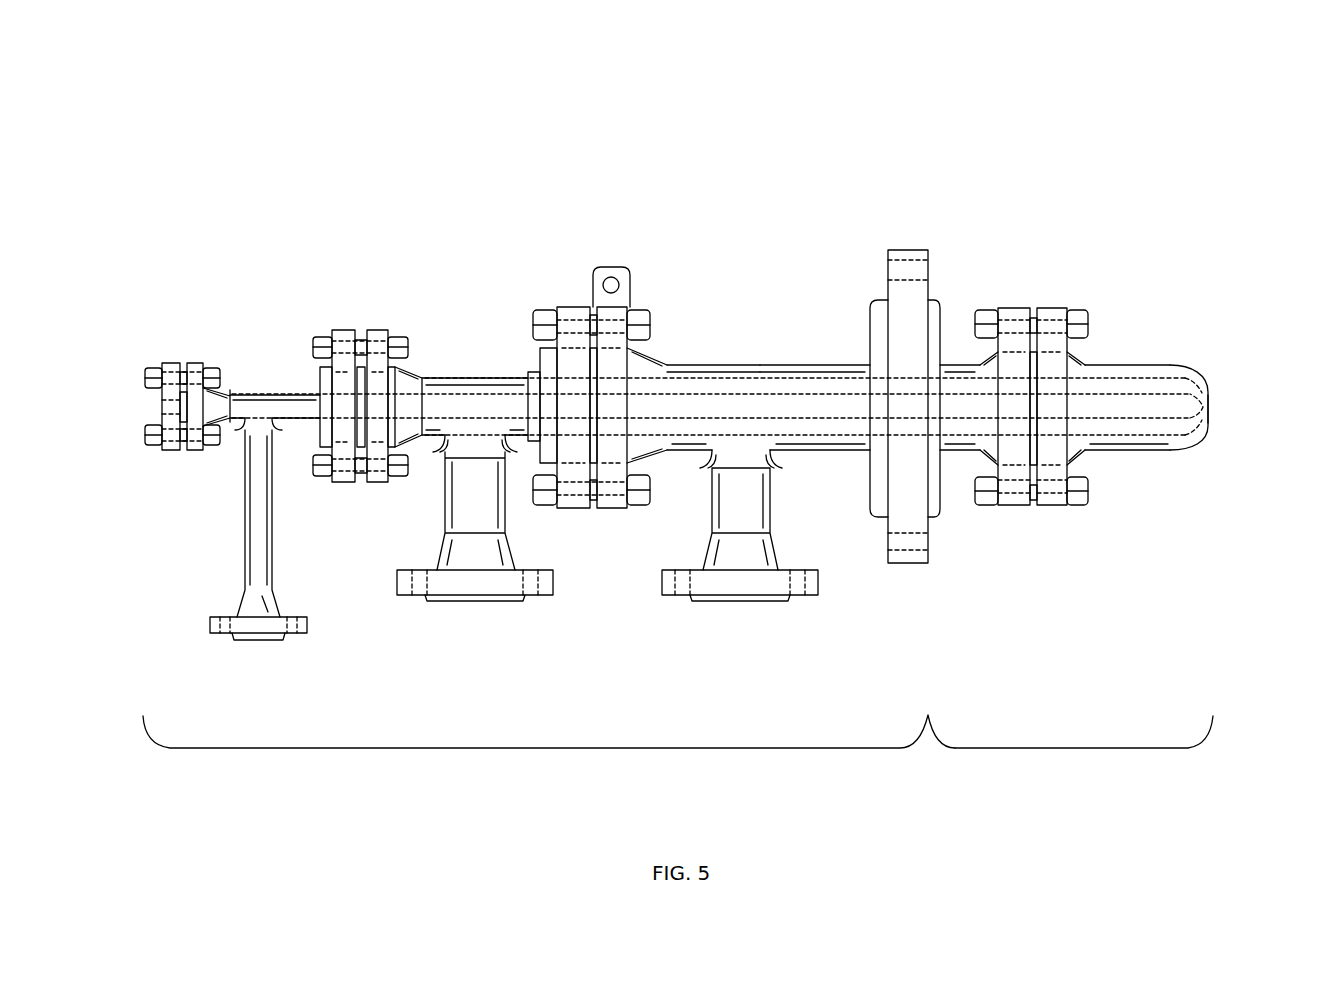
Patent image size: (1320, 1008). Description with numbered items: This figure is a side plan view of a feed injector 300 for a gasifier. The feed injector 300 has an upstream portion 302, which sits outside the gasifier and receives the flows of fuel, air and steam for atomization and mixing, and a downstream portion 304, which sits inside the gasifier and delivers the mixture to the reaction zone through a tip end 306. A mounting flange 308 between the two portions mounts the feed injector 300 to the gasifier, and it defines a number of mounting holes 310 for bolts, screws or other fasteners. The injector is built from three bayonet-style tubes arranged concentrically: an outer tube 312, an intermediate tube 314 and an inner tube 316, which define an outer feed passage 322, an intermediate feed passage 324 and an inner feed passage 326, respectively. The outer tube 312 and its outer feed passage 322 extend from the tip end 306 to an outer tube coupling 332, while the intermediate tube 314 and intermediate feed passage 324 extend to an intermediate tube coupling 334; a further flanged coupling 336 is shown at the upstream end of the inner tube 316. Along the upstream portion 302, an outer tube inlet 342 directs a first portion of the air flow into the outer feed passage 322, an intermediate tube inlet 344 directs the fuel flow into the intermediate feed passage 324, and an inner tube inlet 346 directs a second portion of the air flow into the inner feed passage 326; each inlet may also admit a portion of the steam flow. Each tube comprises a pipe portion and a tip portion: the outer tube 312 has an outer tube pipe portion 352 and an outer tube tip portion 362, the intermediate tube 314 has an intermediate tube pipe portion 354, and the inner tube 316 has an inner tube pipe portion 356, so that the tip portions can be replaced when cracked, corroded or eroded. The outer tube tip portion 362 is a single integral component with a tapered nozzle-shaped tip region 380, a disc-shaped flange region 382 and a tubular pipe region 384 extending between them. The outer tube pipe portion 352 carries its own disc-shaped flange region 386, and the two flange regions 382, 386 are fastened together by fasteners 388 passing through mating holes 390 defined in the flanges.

The feed injector 300 is at (205, 78).
The upstream portion 302 is at (540, 748).
The downstream portion 304 is at (1075, 748).
The tip end 306 is at (1215, 405).
The mounting flange 308 is at (900, 250).
The mounting holes 310 is at (895, 280).
The outer tube 312 is at (742, 365).
The intermediate tube 314 is at (495, 378).
The inner tube 316 is at (305, 400).
The outer feed passage 322 is at (1118, 440).
The intermediate feed passage 324 is at (1138, 425).
The inner feed passage 326 is at (1160, 405).
The outer tube coupling 332 is at (578, 295).
The intermediate tube coupling 334 is at (357, 325).
The flange connection 336 is at (180, 352).
The outer tube inlet 342 is at (715, 597).
The intermediate tube inlet 344 is at (445, 597).
The inner tube inlet 346 is at (248, 635).
The outer tube pipe portion 352 is at (815, 365).
The intermediate tube pipe portion 354 is at (520, 380).
The inner tube pipe portion 356 is at (313, 397).
The outer tube tip portion 362 is at (1190, 325).
The tip region 380 is at (1192, 368).
The flange region 382 is at (1050, 305).
The pipe region 384 is at (1120, 360).
The flange region 386 is at (1015, 305).
The fasteners 388 is at (994, 500).
The mating holes 390 is at (1055, 500).